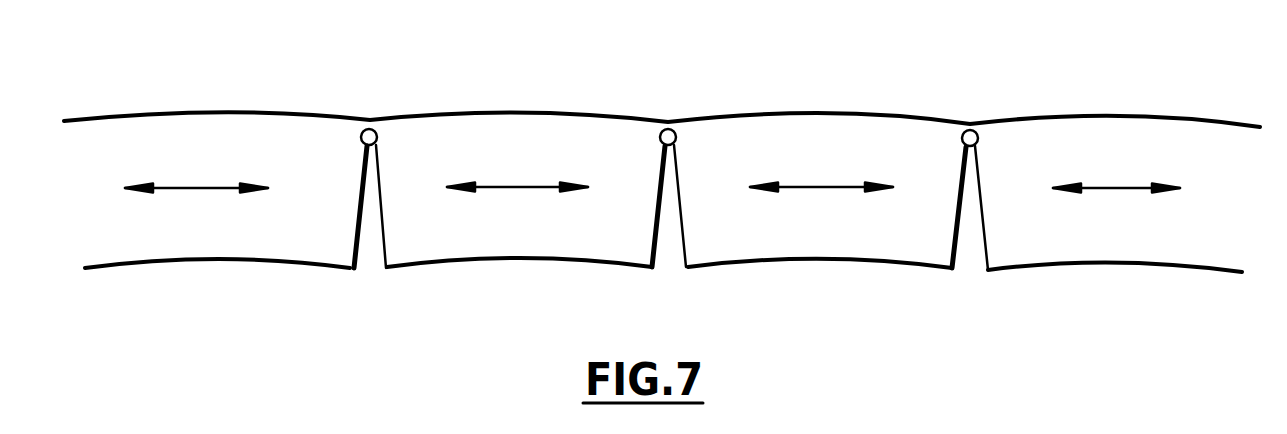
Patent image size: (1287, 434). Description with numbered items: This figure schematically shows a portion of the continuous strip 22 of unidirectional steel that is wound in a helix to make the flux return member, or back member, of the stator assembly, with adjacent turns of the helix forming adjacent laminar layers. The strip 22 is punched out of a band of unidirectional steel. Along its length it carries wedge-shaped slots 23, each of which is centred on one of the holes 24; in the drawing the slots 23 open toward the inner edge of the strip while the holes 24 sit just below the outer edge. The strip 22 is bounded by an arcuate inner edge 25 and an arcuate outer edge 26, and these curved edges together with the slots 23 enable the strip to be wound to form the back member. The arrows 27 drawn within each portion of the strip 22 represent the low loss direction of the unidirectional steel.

The strip 22 is at (223, 230).
The wedge-shaped slots 23 is at (368, 242).
The holes 24 is at (370, 121).
The arcuate inner edge 25 is at (520, 263).
The arcuate outer edge 26 is at (573, 113).
The arrows 27 is at (174, 188).